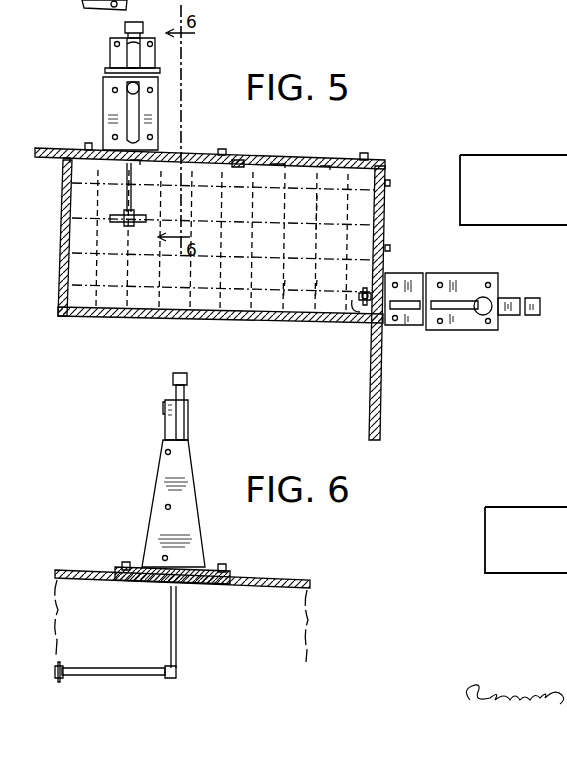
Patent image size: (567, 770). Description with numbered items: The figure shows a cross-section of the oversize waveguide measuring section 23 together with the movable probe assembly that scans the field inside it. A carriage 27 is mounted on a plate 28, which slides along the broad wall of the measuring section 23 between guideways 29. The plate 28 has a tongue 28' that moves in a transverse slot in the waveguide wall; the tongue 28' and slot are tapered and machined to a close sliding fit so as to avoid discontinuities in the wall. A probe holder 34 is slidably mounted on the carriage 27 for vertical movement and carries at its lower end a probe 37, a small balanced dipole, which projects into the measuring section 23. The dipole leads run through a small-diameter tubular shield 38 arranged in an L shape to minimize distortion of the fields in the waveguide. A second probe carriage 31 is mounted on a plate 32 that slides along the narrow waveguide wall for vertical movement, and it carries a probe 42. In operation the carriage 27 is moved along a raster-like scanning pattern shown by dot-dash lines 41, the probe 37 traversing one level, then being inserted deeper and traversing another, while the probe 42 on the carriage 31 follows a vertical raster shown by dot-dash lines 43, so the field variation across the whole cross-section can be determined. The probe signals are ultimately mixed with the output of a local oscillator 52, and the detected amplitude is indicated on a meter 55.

In FIG. 5, the oversize waveguide measuring section 23 is at (62, 270).
In FIG. 6, the oversize waveguide measuring section 23 is at (296, 580).
In FIG. 5, the carriage 27 is at (110, 106).
In FIG. 6, the carriage 27 is at (156, 490).
In FIG. 5, the plate 28 is at (210, 149).
In FIG. 6, the plate 28 is at (182, 552).
In FIG. 5, the tongue 28' is at (246, 144).
In FIG. 6, the tongue 28' is at (172, 591).
In FIG. 6, the guideways 29 is at (118, 566).
In FIG. 5, the probe carriage 31 is at (472, 256).
In FIG. 5, the plate 32 is at (384, 364).
In FIG. 5, the probe holder 34 is at (123, 27).
In FIG. 6, the probe holder 34 is at (187, 402).
In FIG. 5, the probe 37 is at (112, 214).
In FIG. 6, the probe 37 is at (56, 675).
In FIG. 6, the tubular shield 38 is at (138, 650).
In FIG. 5, the dot-dash lines 41 is at (312, 200).
In FIG. 5, the probe 42 is at (363, 316).
In FIG. 5, the dot-dash lines 43 is at (315, 298).
In FIG. 5, the local oscillator 52 is at (560, 140).
In FIG. 6, the meter 55 is at (550, 507).